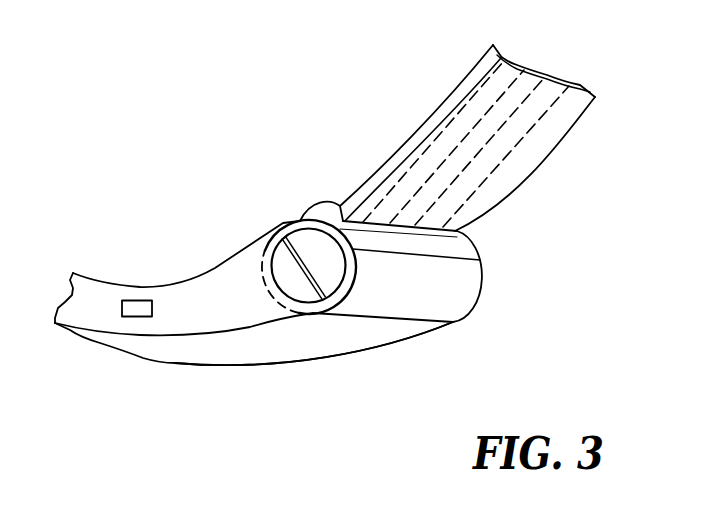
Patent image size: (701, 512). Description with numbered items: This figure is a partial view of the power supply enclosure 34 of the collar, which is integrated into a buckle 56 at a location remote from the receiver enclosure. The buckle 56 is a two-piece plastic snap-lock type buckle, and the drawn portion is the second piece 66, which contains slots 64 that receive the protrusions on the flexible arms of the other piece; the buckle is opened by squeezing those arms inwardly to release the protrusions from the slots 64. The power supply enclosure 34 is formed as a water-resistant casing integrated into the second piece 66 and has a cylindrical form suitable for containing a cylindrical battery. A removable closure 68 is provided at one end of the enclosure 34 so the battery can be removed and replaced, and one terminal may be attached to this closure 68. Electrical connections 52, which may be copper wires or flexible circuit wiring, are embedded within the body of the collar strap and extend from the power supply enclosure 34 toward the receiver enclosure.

The power supply enclosure 34 is at (455, 290).
The electrical connections 52 is at (530, 130).
The buckle 56 is at (123, 252).
The slots 64 is at (132, 308).
The second piece 66 is at (220, 352).
The removable closure 68 is at (312, 248).